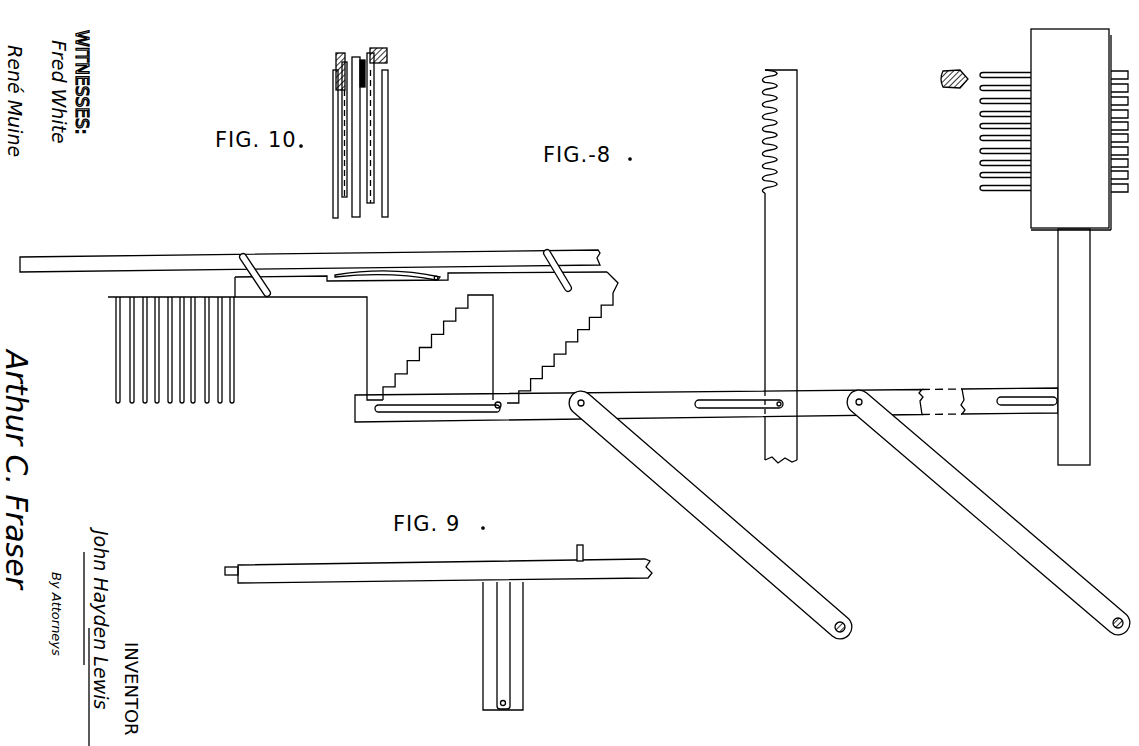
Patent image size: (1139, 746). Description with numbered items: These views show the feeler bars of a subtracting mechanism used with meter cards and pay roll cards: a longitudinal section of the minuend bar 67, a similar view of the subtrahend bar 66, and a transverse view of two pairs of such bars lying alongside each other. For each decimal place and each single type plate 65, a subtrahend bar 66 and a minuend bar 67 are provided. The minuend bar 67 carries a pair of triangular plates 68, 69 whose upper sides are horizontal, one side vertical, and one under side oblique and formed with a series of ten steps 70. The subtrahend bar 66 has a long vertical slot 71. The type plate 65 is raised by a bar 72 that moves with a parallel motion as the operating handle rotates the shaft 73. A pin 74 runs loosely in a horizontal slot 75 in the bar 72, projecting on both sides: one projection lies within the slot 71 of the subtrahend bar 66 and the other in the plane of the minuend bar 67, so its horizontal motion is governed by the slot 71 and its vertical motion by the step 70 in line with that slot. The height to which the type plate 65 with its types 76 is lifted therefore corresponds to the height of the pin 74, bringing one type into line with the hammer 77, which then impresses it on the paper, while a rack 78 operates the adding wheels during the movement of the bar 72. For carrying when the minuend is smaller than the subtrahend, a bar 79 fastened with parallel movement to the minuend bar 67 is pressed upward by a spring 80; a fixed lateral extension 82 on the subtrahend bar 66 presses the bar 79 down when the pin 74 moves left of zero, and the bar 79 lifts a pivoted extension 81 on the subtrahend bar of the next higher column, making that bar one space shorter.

In FIG. 8, the type plate 65 is at (1071, 247).
In FIG. 10, the subtrahend bar 66 is at (396, 158).
In FIG. 9, the subtrahend bar 66 is at (342, 557).
In FIG. 10, the minuend bar 67 is at (372, 188).
In FIG. 8, the minuend bar 67 is at (279, 281).
In FIG. 8, the triangular plate 68 is at (421, 336).
In FIG. 8, the triangular plate 69 is at (438, 347).
In FIG. 8, the steps 70 is at (560, 333).
In FIG. 9, the vertical slot 71 is at (505, 648).
In FIG. 8, the bar 72 is at (662, 383).
In FIG. 8, the shaft 73 is at (848, 624).
In FIG. 8, the pin 74 is at (504, 424).
In FIG. 8, the horizontal slot 75 is at (437, 425).
In FIG. 8, the types 76 is at (997, 73).
In FIG. 8, the hammer 77 is at (955, 59).
In FIG. 8, the rack 78 is at (792, 206).
In FIG. 8, the bar 79 is at (486, 247).
In FIG. 8, the spring 80 is at (405, 268).
In FIG. 10, the pivoted extension 81 is at (382, 71).
In FIG. 9, the pivoted extension 81 is at (218, 571).
In FIG. 9, the fixed lateral extension 82 is at (585, 553).